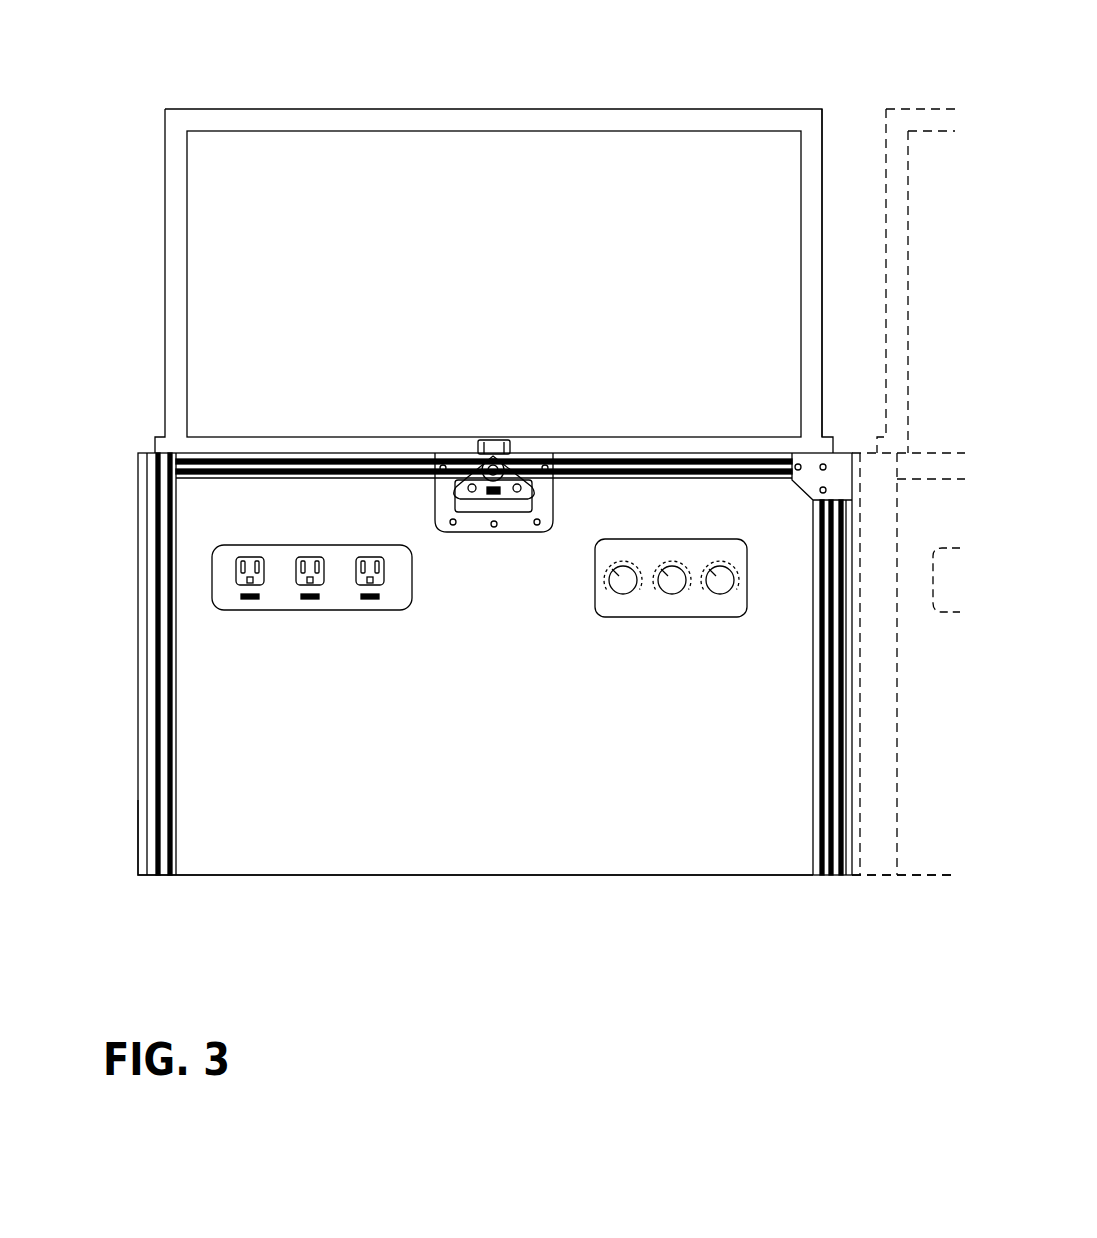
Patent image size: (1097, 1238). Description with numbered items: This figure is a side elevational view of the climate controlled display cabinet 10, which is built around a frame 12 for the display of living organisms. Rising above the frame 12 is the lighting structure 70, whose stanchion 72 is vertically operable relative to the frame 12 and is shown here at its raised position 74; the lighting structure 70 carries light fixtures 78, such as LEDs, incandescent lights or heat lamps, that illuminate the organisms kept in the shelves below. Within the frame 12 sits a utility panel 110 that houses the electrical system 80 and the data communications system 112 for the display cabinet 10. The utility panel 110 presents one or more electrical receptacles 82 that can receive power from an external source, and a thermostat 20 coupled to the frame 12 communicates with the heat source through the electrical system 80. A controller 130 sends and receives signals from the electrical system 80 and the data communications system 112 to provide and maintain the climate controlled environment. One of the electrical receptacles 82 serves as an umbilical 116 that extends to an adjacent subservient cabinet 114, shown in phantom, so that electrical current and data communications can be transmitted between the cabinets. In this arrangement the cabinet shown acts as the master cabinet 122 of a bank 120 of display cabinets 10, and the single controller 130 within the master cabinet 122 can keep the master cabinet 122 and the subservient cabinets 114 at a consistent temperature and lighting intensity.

The climate controlled display cabinet 10 is at (504, 576).
The frame 12 is at (150, 605).
The thermostat 20 is at (731, 607).
The lighting structure 70 is at (524, 241).
The stanchion 72 is at (507, 105).
The raised position 74 is at (825, 165).
The light fixtures 78 is at (548, 131).
The electrical system 80 is at (233, 461).
The electrical receptacle 82 is at (233, 558).
The utility panel 110 is at (493, 823).
The data communications system 112 is at (382, 625).
The subservient cabinet 114 is at (940, 880).
The umbilical 116 is at (413, 555).
The bank 120 is at (815, 952).
The master cabinet 122 is at (130, 850).
The controller 130 is at (692, 745).